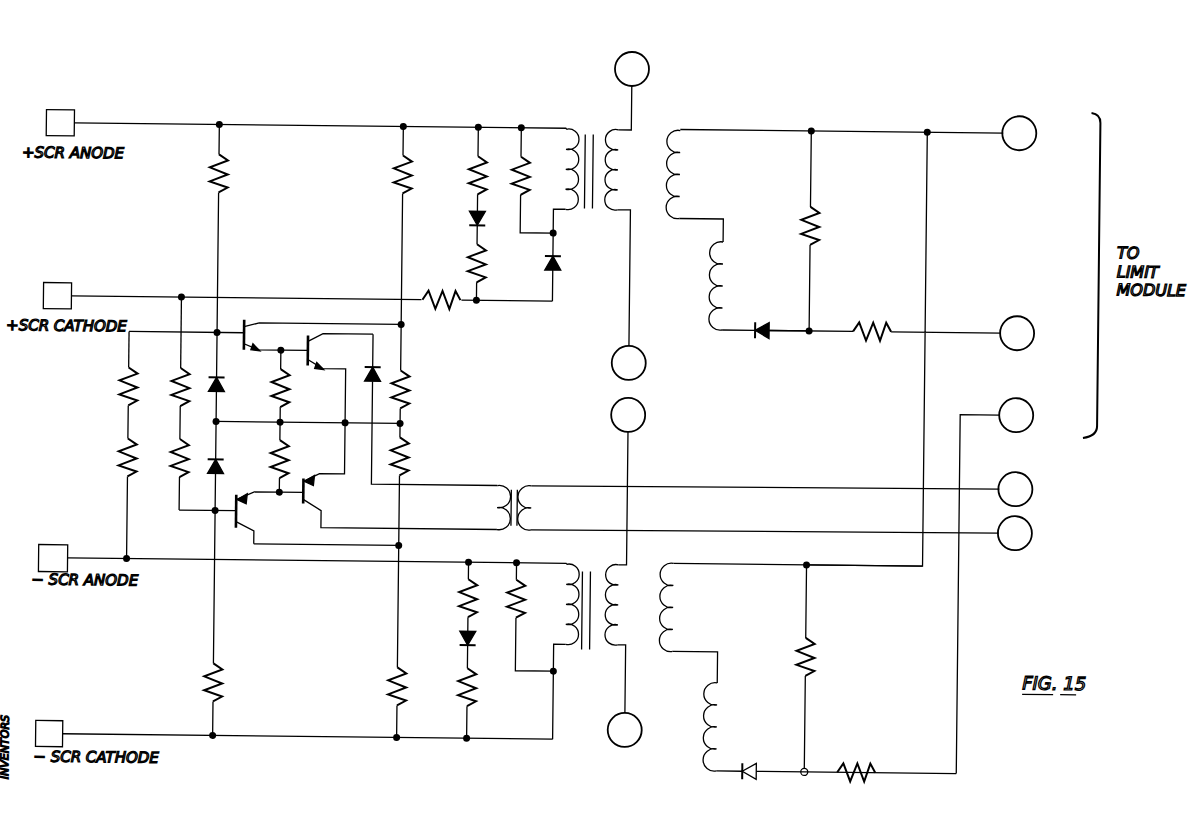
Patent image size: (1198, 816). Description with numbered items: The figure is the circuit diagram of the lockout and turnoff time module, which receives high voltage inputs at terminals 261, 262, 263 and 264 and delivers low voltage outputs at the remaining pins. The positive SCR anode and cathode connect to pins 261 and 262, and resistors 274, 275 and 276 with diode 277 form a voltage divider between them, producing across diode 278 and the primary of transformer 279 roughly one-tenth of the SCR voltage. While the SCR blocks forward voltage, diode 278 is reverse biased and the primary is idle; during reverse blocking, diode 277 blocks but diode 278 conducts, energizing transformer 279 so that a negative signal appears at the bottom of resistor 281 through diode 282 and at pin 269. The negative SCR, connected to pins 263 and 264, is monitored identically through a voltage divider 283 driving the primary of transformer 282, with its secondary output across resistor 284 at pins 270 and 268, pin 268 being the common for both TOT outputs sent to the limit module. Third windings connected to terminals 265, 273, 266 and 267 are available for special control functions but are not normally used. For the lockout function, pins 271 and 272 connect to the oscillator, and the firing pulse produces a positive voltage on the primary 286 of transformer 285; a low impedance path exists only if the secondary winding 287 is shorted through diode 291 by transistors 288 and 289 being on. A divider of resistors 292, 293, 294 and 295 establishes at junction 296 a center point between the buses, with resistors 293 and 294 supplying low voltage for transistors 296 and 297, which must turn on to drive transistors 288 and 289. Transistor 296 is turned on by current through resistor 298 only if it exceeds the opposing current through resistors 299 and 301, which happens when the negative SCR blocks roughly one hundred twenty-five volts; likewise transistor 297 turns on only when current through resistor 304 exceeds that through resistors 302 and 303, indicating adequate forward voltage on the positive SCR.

The terminal 261 is at (66, 121).
The terminal 262 is at (65, 296).
The terminal 263 is at (64, 558).
The terminal 264 is at (62, 733).
The terminal 265 is at (640, 60).
The terminal 266 is at (644, 410).
The terminal 267 is at (636, 726).
The pin 268 is at (1035, 128).
The pin 269 is at (1035, 328).
The pin 270 is at (1035, 410).
The pin 271 is at (1035, 485).
The pin 272 is at (1035, 530).
The terminal 273 is at (644, 360).
The resistor 274 is at (438, 312).
The resistor 275 is at (482, 259).
The resistor 276 is at (512, 160).
The diode 277 is at (468, 218).
The diode 278 is at (560, 264).
The transformer 279 is at (582, 130).
The resistor 281 is at (812, 208).
The diode 282 is at (580, 561).
The voltage divider 283 is at (528, 703).
The resistor 284 is at (812, 654).
The transformer 285 is at (727, 497).
The primary 286 is at (536, 503).
The secondary winding 287 is at (494, 511).
The transistor 288 is at (305, 334).
The transistor 289 is at (306, 508).
The diode 291 is at (382, 368).
The resistor 292 is at (392, 177).
The resistor 293 is at (406, 384).
The resistor 294 is at (406, 466).
The resistor 295 is at (392, 689).
The transistor 296 is at (246, 320).
The transistor 297 is at (243, 499).
The resistor 298 is at (212, 185).
The resistor 299 is at (122, 470).
The resistor 301 is at (124, 382).
The resistor 302 is at (176, 473).
The resistor 303 is at (176, 381).
The resistor 304 is at (224, 682).